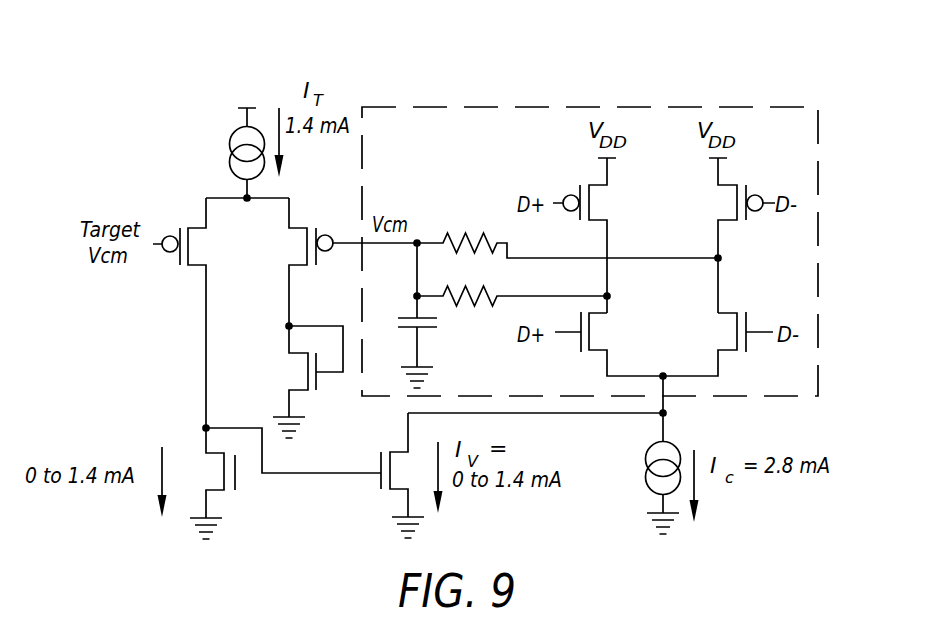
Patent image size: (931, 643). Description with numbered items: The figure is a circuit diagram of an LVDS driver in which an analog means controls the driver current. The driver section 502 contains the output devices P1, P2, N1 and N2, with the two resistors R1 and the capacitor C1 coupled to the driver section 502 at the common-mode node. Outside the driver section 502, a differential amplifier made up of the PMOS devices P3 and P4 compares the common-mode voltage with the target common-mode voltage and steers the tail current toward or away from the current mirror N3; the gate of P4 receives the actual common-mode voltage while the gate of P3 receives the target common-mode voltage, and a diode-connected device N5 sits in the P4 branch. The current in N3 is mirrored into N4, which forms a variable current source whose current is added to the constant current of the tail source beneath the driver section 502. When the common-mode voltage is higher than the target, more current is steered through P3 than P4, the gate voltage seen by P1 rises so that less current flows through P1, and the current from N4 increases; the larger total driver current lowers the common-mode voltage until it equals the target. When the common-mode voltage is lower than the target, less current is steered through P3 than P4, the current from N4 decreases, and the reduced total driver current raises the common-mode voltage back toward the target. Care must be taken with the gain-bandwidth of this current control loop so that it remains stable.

The differential output stage 502 is at (690, 103).
The PMOS transistor P1 is at (594, 235).
The PMOS transistor P2 is at (735, 235).
The PMOS transistor P3 is at (188, 313).
The PMOS transistor P4 is at (341, 262).
The NMOS transistor N1 is at (609, 344).
The NMOS transistor N2 is at (718, 344).
The current mirror N3 is at (281, 482).
The variable current source N4 is at (403, 475).
The NMOS transistor N5 is at (303, 380).
The resistor R1 is at (569, 256).
The capacitor C1 is at (403, 315).